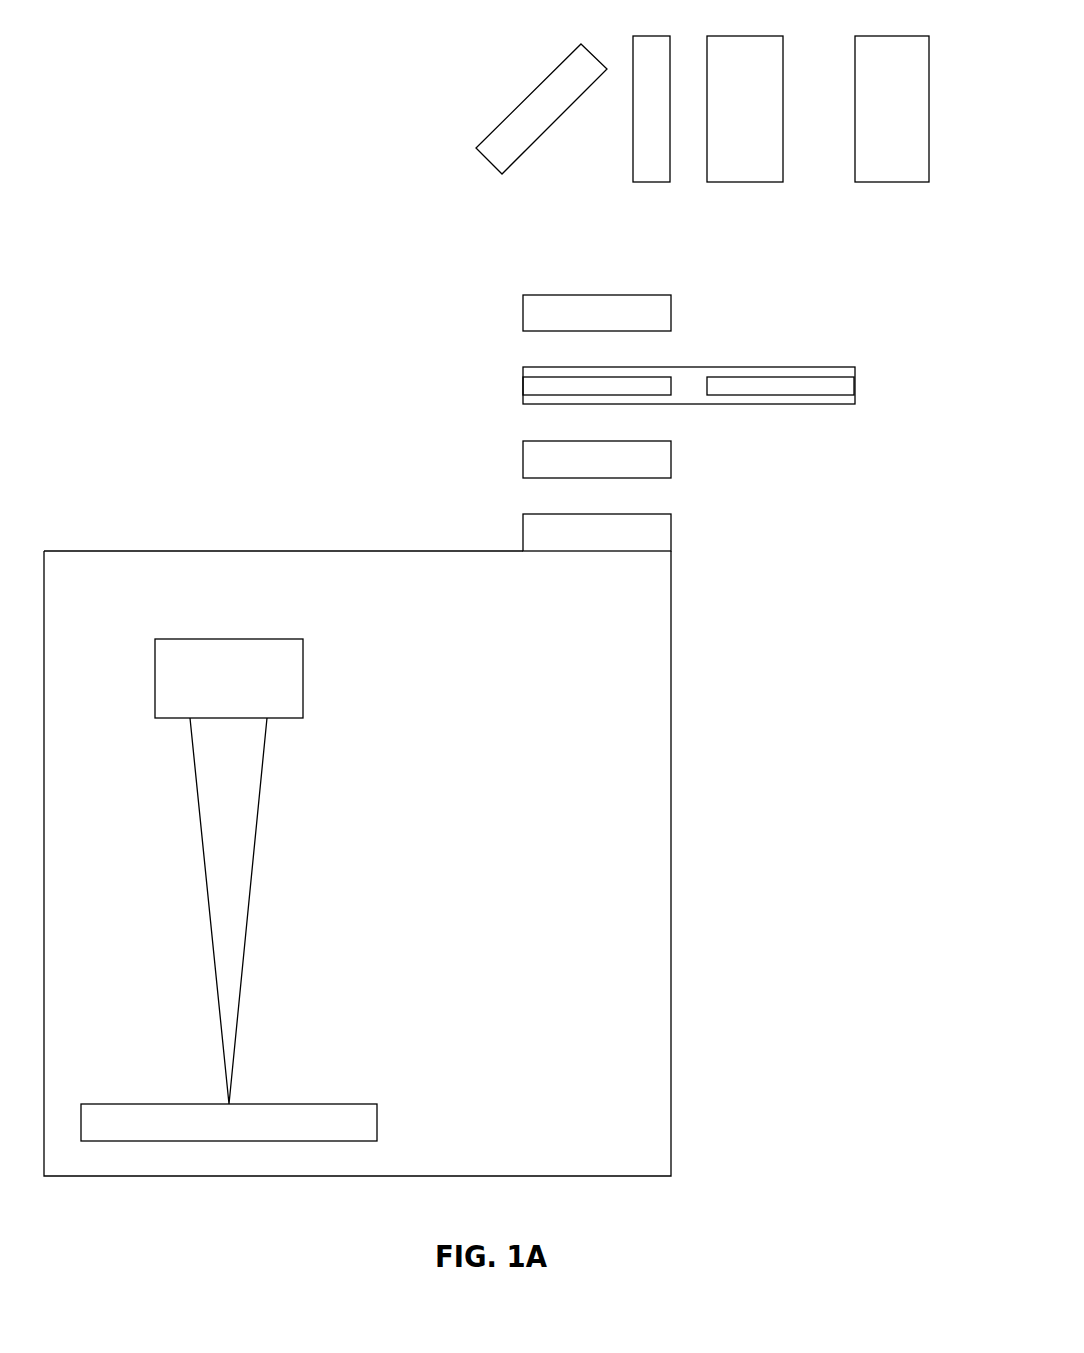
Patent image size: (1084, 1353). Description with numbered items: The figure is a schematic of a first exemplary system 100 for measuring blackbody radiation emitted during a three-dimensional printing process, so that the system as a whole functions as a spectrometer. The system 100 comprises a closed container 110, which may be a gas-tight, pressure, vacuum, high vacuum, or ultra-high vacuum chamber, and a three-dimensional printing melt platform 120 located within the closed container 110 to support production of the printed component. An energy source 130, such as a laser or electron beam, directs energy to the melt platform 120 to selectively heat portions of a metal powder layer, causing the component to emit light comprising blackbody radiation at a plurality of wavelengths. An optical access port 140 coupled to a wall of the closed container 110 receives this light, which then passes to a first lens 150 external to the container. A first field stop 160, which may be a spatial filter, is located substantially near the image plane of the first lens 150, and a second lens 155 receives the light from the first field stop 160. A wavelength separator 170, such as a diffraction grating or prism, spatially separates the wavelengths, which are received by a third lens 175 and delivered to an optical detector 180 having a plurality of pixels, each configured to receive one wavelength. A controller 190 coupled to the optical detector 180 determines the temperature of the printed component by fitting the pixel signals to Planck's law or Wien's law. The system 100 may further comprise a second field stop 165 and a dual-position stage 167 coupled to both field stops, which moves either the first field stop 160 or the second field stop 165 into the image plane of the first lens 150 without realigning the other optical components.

The system 100 is at (208, 92).
The closed container 110 is at (343, 542).
The 3D printing melt platform 120 is at (385, 1126).
The energy source 130 is at (228, 625).
The optical access port 140 is at (683, 534).
The first lens 150 is at (507, 457).
The second lens 155 is at (507, 310).
The first field stop 160 is at (507, 383).
The second field stop 165 is at (868, 386).
The dual-position stage 167 is at (712, 363).
The wavelength separator 170 is at (470, 148).
The third lens 175 is at (652, 192).
The optical detector 180 is at (744, 192).
The controller 190 is at (890, 192).